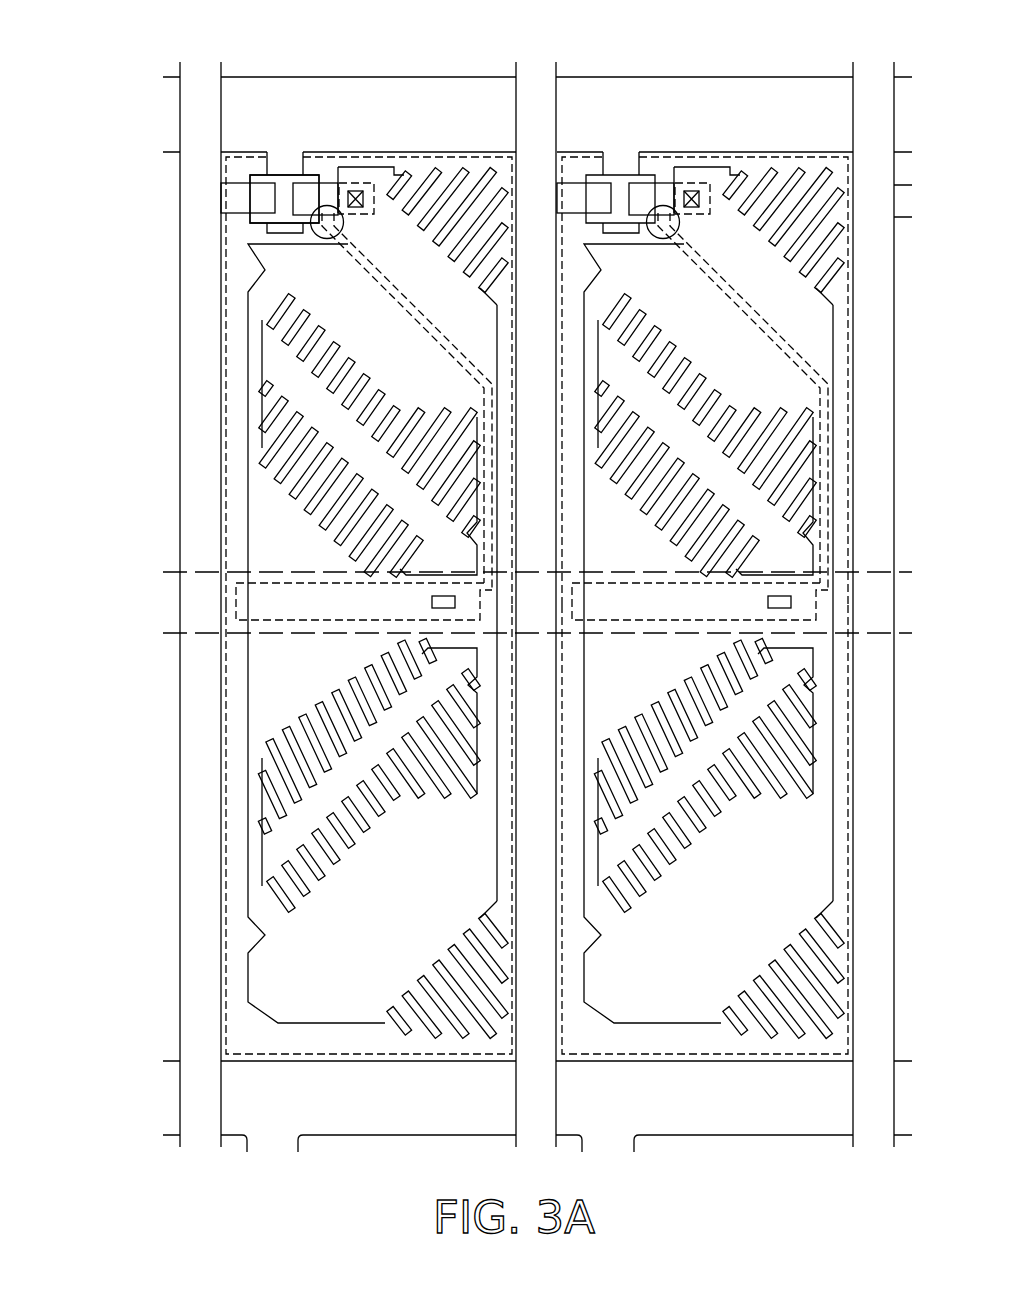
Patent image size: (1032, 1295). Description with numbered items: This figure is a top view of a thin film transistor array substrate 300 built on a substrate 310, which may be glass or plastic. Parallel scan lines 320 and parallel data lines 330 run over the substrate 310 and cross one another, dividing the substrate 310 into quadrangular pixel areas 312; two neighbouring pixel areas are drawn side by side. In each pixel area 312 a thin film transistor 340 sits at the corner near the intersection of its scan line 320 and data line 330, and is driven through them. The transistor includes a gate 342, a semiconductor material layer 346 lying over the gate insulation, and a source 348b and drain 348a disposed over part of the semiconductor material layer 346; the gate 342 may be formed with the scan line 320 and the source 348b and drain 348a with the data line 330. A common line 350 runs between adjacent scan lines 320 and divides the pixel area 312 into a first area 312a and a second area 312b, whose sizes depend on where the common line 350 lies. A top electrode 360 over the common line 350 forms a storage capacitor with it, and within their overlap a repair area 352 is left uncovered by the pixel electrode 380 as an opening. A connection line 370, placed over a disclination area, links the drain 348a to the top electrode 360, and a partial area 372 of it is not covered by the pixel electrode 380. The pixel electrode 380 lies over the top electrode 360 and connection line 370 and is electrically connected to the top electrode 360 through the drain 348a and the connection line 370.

The thin film transistor array substrate 300 is at (465, 634).
The substrate 310 is at (337, 540).
The pixel area 312 is at (441, 605).
The first area 312a is at (467, 400).
The second area 312b is at (468, 812).
The scan line 320 is at (372, 100).
The data line 330 is at (187, 362).
The thin film transistor 340 is at (178, 210).
The gate 342 is at (247, 228).
The semiconductor material layer 346 is at (280, 204).
The drain 348a is at (303, 194).
The source 348b is at (243, 190).
The common line 350 is at (312, 572).
The repair area 352 is at (460, 603).
The top electrode 360 is at (313, 620).
The connection line 370 is at (345, 258).
The partial area 372 is at (349, 226).
The pixel electrode 380 is at (232, 515).